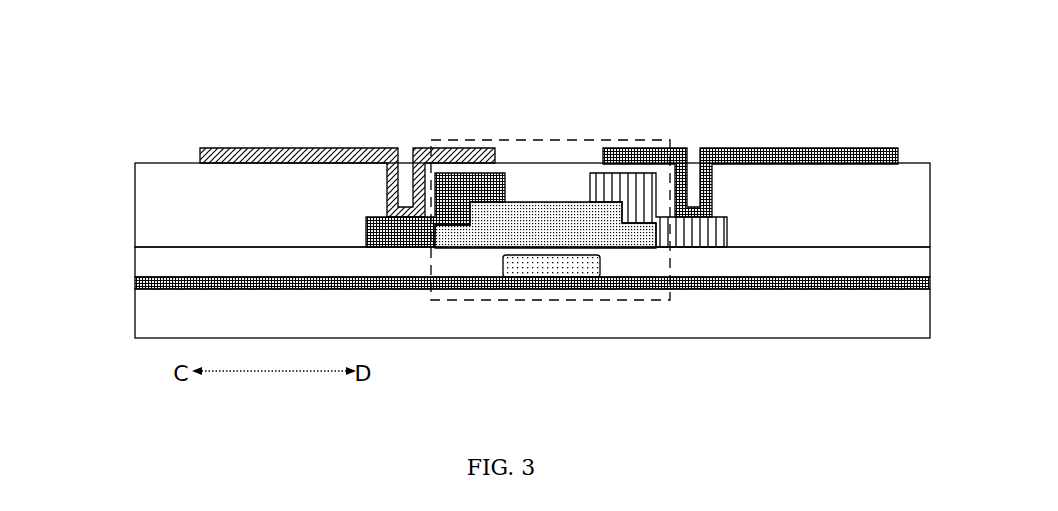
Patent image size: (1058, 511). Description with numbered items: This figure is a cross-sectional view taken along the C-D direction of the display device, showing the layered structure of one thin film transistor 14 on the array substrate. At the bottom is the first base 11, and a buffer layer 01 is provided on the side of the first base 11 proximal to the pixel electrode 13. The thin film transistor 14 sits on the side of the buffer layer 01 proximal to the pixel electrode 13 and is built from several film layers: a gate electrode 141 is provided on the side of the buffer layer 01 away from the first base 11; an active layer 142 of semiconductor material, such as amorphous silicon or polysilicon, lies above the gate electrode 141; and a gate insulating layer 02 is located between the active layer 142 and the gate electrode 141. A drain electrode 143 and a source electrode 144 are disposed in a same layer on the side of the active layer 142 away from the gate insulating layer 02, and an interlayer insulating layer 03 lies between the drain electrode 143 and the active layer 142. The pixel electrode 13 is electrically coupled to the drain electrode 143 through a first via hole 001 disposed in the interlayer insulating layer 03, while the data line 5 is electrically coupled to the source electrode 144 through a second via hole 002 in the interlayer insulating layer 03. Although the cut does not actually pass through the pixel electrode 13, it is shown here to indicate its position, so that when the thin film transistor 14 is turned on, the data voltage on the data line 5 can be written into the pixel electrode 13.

The pixel electrode 13 is at (284, 148).
The thin film transistor 14 is at (629, 140).
The data line 5 is at (775, 148).
The gate electrode 141 is at (551, 266).
The active layer 142 is at (557, 215).
The drain electrode 143 is at (435, 210).
The source electrode 144 is at (658, 210).
The first via hole 001 is at (381, 185).
The second via hole 002 is at (732, 192).
The buffer layer 01 is at (135, 282).
The gate insulating layer 02 is at (145, 263).
The interlayer insulating layer 03 is at (145, 208).
The first base 11 is at (168, 320).